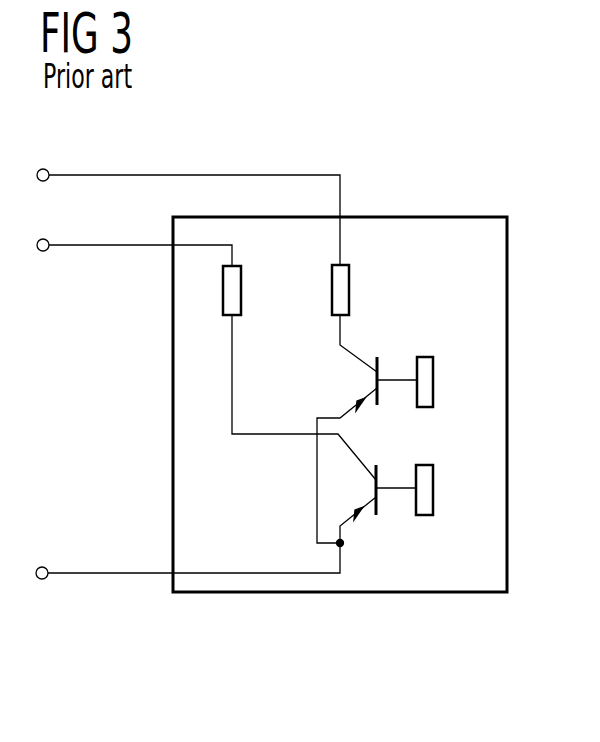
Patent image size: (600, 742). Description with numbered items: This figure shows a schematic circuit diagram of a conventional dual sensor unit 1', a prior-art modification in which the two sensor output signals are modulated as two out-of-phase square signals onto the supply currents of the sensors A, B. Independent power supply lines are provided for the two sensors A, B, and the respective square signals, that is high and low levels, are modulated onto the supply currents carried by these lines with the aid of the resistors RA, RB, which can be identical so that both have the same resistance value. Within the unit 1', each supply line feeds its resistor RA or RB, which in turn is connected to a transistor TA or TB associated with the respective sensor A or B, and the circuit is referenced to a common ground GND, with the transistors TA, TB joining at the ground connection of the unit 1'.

The dual sensor unit 1' is at (340, 441).
The ground terminal GND is at (188, 554).
The resistor RA is at (349, 291).
The resistor RB is at (242, 291).
The transistor A TA is at (379, 359).
The transistor B TB is at (378, 468).
The sensor A is at (433, 380).
The sensor B is at (433, 488).